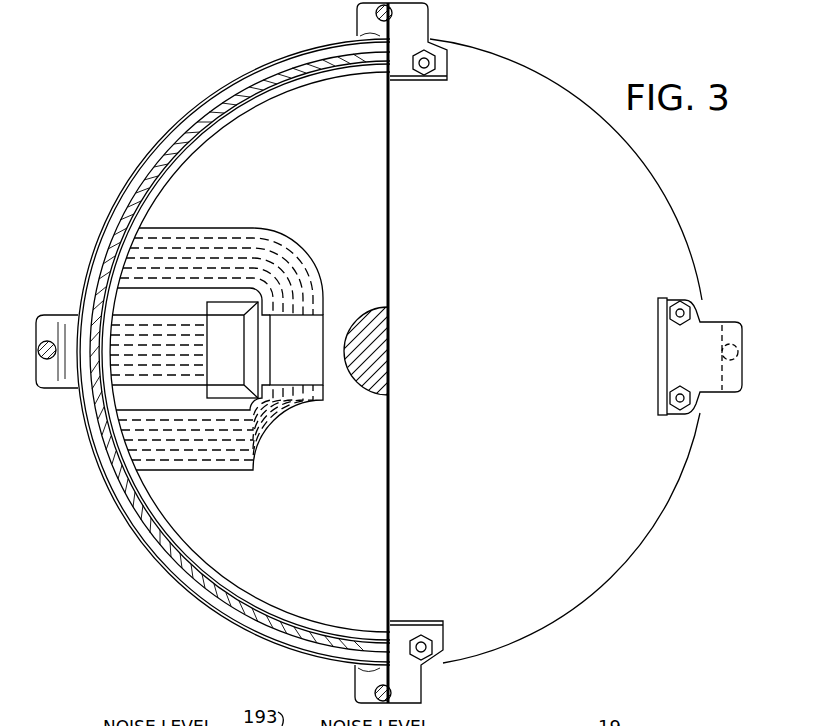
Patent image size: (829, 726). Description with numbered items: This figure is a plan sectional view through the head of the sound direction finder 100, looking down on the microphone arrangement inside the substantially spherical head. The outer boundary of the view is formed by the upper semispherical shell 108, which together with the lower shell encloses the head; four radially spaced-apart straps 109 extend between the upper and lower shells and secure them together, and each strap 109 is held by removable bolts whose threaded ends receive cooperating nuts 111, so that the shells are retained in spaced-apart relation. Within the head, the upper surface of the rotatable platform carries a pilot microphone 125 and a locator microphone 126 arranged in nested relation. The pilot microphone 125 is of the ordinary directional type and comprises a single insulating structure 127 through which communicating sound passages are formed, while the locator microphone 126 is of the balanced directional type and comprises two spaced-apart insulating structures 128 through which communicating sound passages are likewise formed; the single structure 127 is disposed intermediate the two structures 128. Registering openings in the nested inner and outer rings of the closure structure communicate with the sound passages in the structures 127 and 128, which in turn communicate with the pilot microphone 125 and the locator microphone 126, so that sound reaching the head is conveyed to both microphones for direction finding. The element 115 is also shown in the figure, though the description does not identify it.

The sound direction finder 100 is at (428, 353).
The upper semispherical shell 108 is at (622, 555).
The strap 109 is at (418, 23).
The nut 111 is at (432, 64).
The shaft / hub 115 is at (374, 318).
The pilot microphone 125 is at (232, 350).
The locator microphone 126 is at (296, 350).
The insulating structure 127 is at (127, 323).
The insulating structure 128 is at (194, 229).